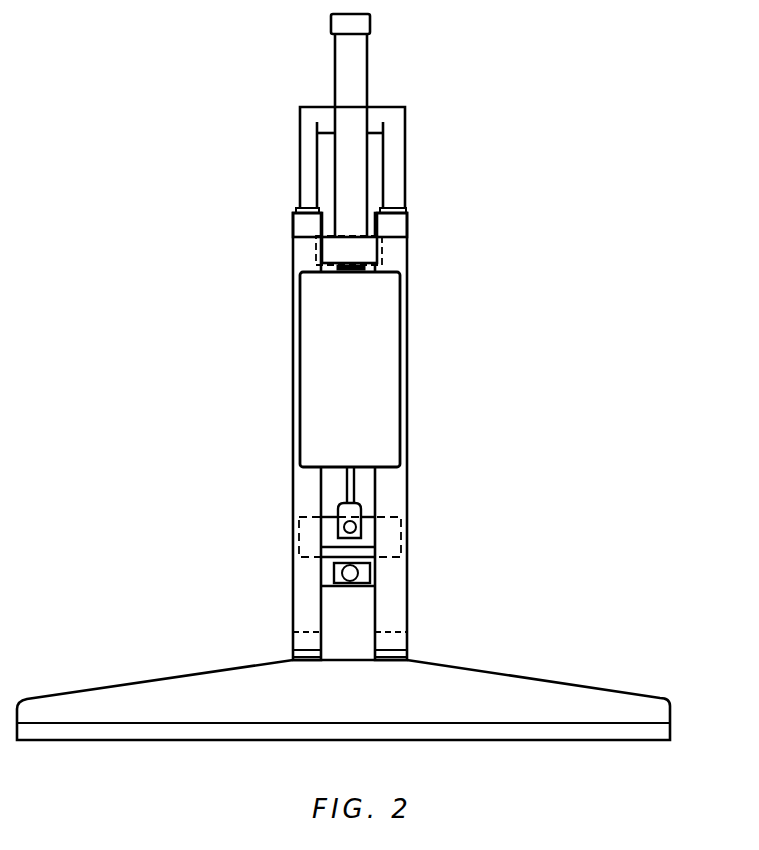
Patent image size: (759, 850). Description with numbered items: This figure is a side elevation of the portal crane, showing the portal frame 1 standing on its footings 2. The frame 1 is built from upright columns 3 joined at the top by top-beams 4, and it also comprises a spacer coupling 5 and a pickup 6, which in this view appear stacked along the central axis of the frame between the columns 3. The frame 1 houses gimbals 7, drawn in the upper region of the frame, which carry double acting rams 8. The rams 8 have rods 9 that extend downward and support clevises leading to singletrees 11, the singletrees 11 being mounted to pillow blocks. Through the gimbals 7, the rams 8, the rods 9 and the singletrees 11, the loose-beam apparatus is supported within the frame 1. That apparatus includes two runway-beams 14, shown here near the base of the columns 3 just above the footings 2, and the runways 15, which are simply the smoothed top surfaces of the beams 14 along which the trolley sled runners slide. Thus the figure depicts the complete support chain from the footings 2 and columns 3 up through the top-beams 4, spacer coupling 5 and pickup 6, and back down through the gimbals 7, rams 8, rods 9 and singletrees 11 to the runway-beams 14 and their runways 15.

The portal frame 1 is at (436, 503).
The footings 2 is at (622, 725).
The columns 3 is at (300, 496).
The top-beams 4 is at (303, 222).
The spacer coupling 5 is at (382, 328).
The pickup 6 is at (395, 160).
The gimbals 7 is at (368, 254).
The double acting rams 8 is at (357, 75).
The rods 9 is at (352, 487).
The singletrees 11 is at (368, 541).
The runway-beams 14 is at (310, 632).
The runways 15 is at (393, 553).